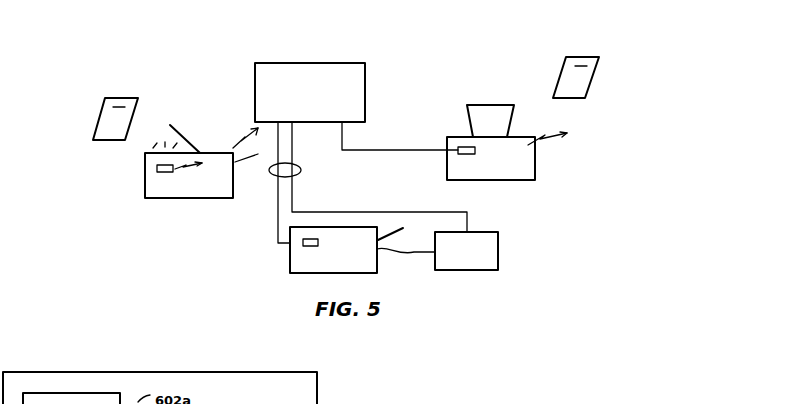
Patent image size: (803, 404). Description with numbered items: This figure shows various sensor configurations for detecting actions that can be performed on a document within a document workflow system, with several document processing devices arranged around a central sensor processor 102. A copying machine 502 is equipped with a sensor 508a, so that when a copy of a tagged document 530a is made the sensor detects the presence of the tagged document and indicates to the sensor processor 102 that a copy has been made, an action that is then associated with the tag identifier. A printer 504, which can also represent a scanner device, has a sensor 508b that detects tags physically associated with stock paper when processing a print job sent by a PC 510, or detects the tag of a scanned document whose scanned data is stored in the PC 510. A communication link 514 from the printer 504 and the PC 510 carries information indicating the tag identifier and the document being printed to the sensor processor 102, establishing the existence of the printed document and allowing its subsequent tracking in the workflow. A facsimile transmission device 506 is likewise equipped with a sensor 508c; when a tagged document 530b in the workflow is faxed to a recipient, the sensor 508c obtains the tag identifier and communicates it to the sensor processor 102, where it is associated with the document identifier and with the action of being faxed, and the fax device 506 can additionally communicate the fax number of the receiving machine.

The workflow processor 102 is at (366, 92).
The copying machine 502 is at (170, 162).
The printer 504 is at (315, 255).
The facsimile transmission (fax) device 506 is at (523, 143).
The sensor 508a is at (165, 172).
The sensor 508b is at (310, 246).
The sensor 508c is at (466, 154).
The PC 510 is at (498, 250).
The communication link 514 is at (300, 172).
The tagged document 530a is at (107, 90).
The tagged document 530b is at (609, 61).